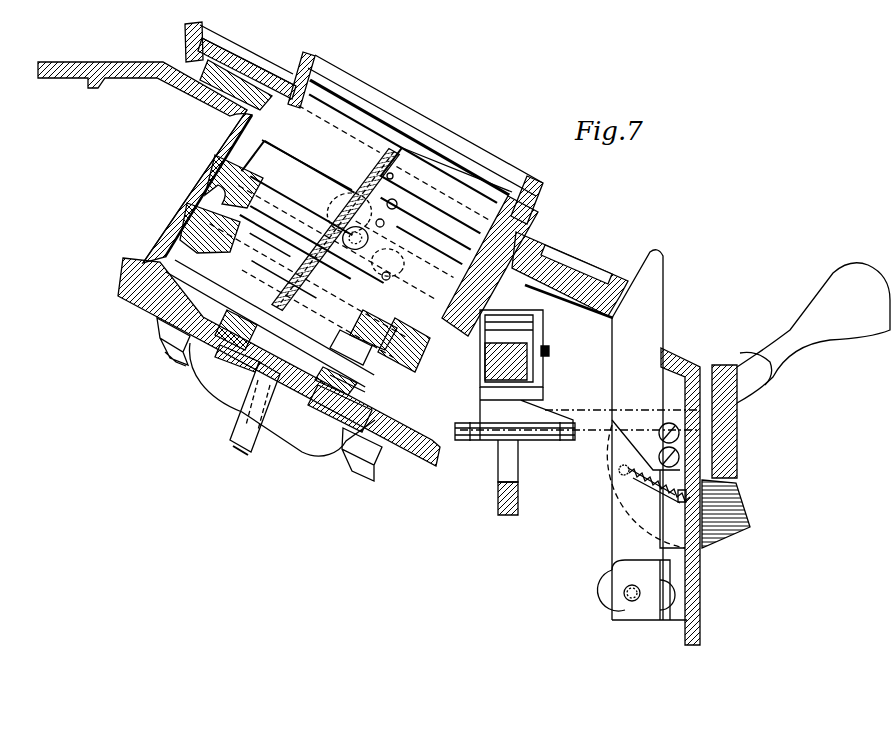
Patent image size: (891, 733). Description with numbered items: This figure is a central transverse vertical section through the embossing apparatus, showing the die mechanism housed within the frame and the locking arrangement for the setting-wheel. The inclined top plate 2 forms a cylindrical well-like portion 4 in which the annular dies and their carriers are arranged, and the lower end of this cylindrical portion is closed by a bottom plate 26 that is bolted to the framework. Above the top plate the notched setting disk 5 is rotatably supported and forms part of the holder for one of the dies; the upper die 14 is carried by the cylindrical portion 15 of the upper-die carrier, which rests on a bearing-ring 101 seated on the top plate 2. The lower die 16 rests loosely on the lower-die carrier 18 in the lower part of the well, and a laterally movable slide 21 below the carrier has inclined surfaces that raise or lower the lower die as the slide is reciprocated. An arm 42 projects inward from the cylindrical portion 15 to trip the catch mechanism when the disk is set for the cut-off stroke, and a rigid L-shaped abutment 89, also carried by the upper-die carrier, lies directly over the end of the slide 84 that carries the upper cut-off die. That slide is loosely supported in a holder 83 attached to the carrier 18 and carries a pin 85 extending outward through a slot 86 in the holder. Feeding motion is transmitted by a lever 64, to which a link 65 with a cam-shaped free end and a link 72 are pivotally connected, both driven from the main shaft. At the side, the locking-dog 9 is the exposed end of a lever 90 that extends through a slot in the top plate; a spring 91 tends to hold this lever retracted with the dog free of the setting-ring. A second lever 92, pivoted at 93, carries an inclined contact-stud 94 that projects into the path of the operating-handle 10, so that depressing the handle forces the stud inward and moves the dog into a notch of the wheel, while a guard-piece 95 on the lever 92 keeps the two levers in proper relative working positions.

The top plate 2 is at (200, 86).
The setting disk 5 is at (255, 63).
The cylindrical portion of the upper-die carrier 15 is at (238, 137).
The upper die 14 is at (228, 152).
The cylindrical well-like portion 4 is at (205, 180).
The lower die 16 is at (200, 202).
The bottom plate 26 is at (156, 305).
The slot 86 is at (350, 190).
The arm 42 is at (387, 117).
The L-shaped abutment 89 is at (410, 143).
The slide 84 is at (392, 177).
The holder 83 is at (395, 203).
The pin 85 is at (382, 223).
The lower-die carrier 18 is at (368, 340).
The slide 21 is at (358, 390).
The lever 64 is at (536, 327).
The link 65 is at (530, 366).
The bearing-ring 101 is at (565, 255).
The locking-dog 9 is at (637, 435).
The pivot 93 is at (676, 380).
The operating-handle 10 is at (764, 380).
The guard-piece 95 is at (657, 445).
The spring 91 is at (651, 487).
The lever 92 is at (648, 484).
The lever 90 is at (620, 530).
The contact-stud 94 is at (726, 523).
The link 72 is at (505, 470).